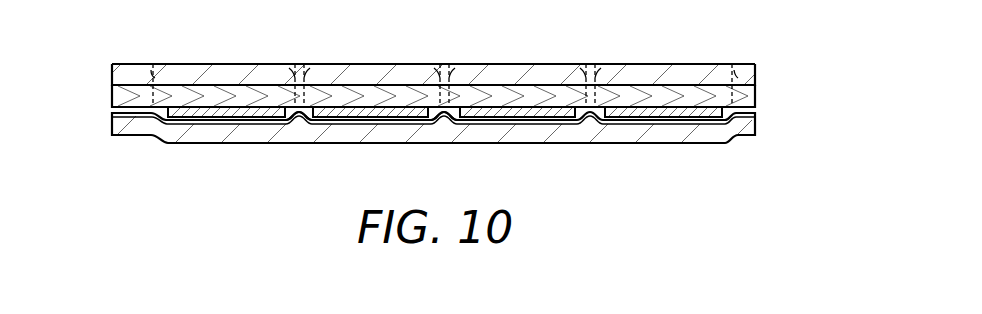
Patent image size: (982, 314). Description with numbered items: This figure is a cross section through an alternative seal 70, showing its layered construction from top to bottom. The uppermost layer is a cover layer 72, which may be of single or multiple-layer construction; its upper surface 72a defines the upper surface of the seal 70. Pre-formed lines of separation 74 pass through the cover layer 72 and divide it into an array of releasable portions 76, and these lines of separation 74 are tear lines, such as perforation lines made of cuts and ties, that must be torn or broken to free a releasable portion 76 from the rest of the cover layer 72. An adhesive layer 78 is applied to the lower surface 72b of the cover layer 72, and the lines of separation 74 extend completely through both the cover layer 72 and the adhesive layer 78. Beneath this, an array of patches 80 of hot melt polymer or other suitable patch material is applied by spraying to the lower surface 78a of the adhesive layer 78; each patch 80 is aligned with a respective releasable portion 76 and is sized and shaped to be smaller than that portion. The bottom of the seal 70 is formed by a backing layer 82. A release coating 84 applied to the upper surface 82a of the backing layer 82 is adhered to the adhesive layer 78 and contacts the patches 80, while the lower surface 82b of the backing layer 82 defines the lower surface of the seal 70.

The alternative seal 70 is at (107, 51).
The cover layer 72 is at (757, 73).
The upper surface of the cover layer 72a is at (177, 62).
The lower surface of the cover layer 72b is at (712, 87).
The lines of separation 74 is at (153, 63).
The releasable portions 76 is at (225, 72).
The adhesive layer 78 is at (118, 97).
The lower surface of the adhesive layer 78a is at (303, 127).
The patches 80 is at (226, 112).
The backing layer 82 is at (593, 133).
The upper surface of the backing layer 82a is at (437, 128).
The lower surface of the backing layer 82b is at (182, 143).
The release coating 84 is at (727, 136).